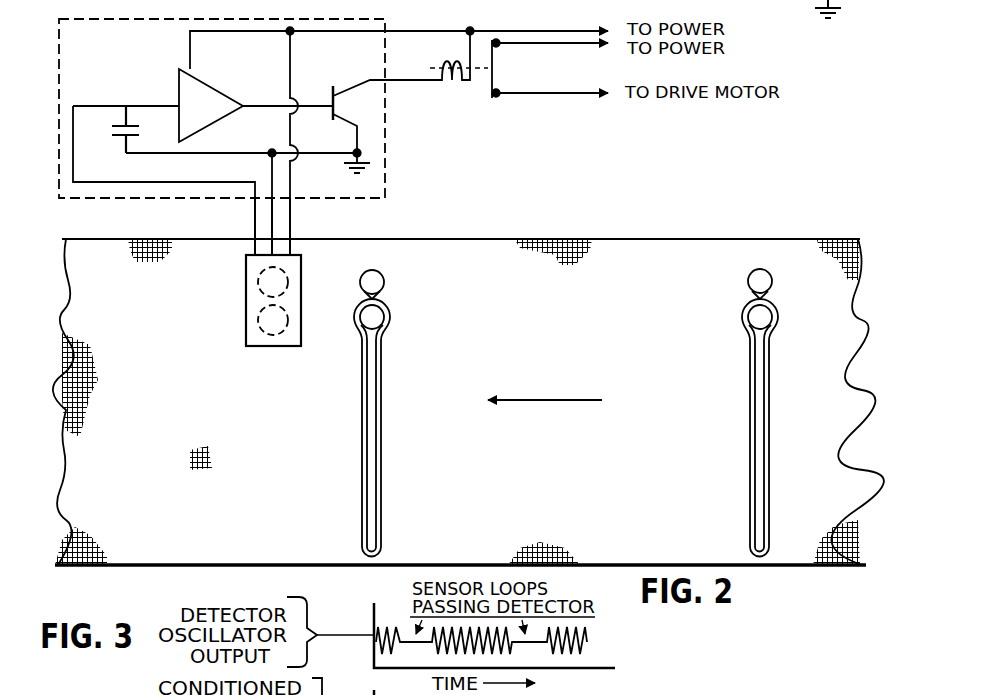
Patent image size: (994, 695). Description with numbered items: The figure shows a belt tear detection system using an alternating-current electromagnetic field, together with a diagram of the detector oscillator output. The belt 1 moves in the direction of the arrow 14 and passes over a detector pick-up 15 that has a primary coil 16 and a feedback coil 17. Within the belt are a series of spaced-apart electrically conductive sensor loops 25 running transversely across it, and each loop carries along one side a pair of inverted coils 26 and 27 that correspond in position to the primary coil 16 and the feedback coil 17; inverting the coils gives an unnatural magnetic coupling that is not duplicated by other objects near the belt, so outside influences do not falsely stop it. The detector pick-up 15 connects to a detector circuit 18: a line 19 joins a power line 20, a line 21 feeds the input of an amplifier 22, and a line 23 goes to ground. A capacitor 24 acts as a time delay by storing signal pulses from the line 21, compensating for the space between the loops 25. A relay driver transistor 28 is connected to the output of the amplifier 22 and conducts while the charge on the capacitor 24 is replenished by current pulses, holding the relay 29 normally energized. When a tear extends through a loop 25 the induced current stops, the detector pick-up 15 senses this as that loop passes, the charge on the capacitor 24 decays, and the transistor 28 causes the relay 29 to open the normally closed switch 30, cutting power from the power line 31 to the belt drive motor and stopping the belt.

The belt 1 is at (610, 239).
The arrow 14 is at (540, 400).
The detector pick-up 15 is at (246, 262).
The primary coil 16 is at (258, 286).
The feedback coil 17 is at (258, 320).
The detector circuit 18 is at (392, 150).
The line 19 is at (292, 231).
The power line 20 is at (540, 32).
The line 21 is at (255, 221).
The amplifier 22 is at (215, 97).
The line 23 is at (275, 218).
The capacitor 24 is at (113, 137).
The sensor loops 25 is at (381, 468).
The inverted coil 26 is at (386, 279).
The inverted coil 27 is at (392, 319).
The relay driver transistor 28 is at (330, 95).
The relay 29 is at (450, 82).
The normally closed switch 30 is at (494, 68).
The power line 31 is at (546, 48).